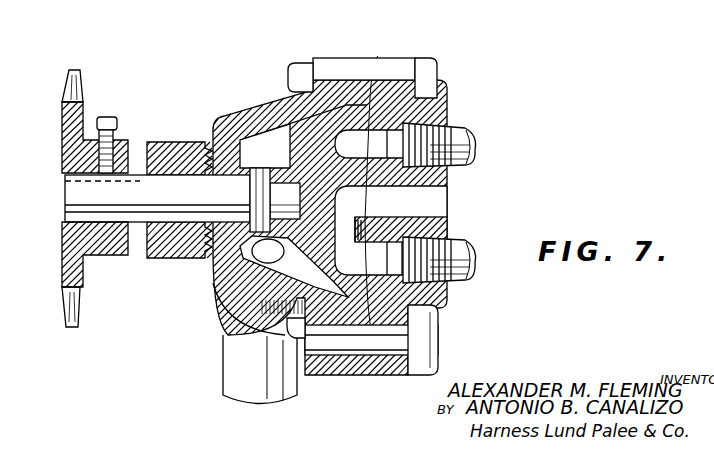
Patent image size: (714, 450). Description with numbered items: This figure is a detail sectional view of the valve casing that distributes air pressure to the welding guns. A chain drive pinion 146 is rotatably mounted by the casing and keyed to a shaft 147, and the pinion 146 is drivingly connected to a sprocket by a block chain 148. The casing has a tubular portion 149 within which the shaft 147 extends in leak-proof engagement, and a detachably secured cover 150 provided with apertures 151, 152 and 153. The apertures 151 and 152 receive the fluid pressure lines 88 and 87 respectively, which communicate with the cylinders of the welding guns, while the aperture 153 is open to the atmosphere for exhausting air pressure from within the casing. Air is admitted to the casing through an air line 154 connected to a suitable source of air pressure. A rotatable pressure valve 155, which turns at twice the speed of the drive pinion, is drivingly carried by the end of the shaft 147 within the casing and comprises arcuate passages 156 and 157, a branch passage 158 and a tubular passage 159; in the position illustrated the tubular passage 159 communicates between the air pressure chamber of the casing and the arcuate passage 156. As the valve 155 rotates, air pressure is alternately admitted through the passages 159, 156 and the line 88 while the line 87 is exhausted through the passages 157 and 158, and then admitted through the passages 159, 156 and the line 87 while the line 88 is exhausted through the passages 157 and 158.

The chain drive pinion 146 is at (85, 76).
The shaft 147 is at (68, 205).
The block chain 148 is at (228, 113).
The tubular portion 149 is at (278, 92).
The cover 150 is at (443, 102).
The aperture 151 is at (378, 56).
The aperture 152 is at (371, 340).
The aperture 153 is at (449, 213).
The air line 154 is at (272, 400).
The rotatable pressure valve 155 is at (298, 162).
The arcuate passage 156 is at (338, 143).
The arcuate passage 157 is at (342, 250).
The branch passage 158 is at (366, 206).
The tubular passage 159 is at (292, 159).
The fluid pressure line 88 is at (473, 126).
The fluid pressure line 87 is at (470, 251).